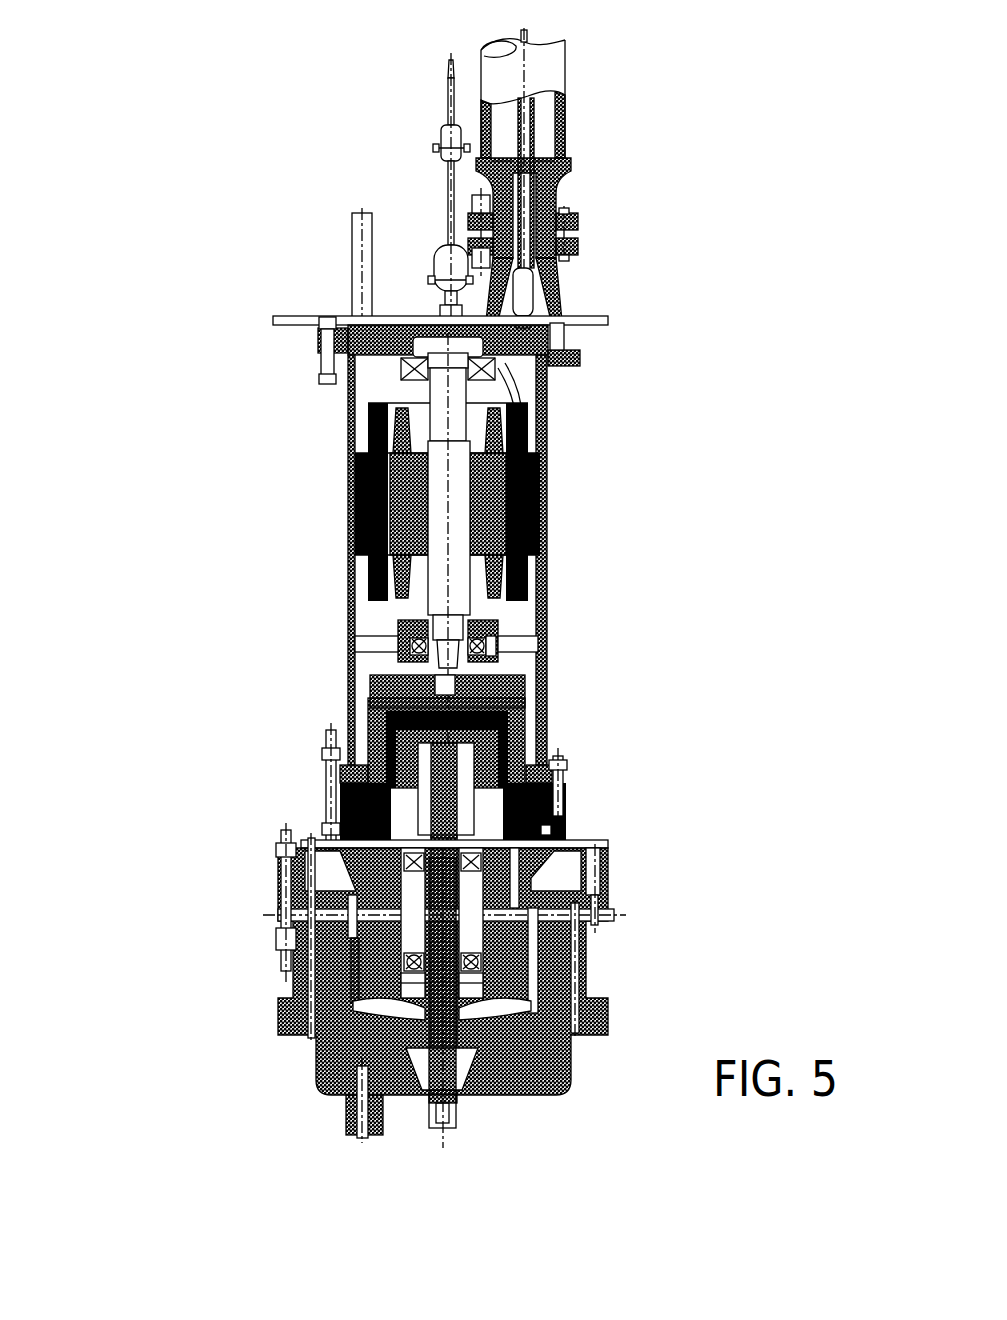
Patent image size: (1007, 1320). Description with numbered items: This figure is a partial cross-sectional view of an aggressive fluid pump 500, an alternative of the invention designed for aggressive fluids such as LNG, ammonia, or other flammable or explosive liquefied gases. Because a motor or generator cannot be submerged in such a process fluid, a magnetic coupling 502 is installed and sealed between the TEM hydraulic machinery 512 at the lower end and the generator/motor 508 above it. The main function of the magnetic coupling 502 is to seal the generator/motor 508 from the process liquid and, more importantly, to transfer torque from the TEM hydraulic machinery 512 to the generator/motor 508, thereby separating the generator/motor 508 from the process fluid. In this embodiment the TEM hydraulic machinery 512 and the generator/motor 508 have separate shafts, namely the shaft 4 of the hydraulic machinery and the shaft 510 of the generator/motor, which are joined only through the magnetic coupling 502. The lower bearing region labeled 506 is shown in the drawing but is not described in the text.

The aggressive fluid pump 500 is at (118, 972).
The shaft 510 is at (465, 493).
The generator/motor 508 is at (467, 603).
The magnetic coupling 502 is at (497, 742).
The lower bearing assembly 506 is at (470, 857).
The TEM hydraulic machinery 512 is at (604, 930).
The shaft 4 is at (427, 777).